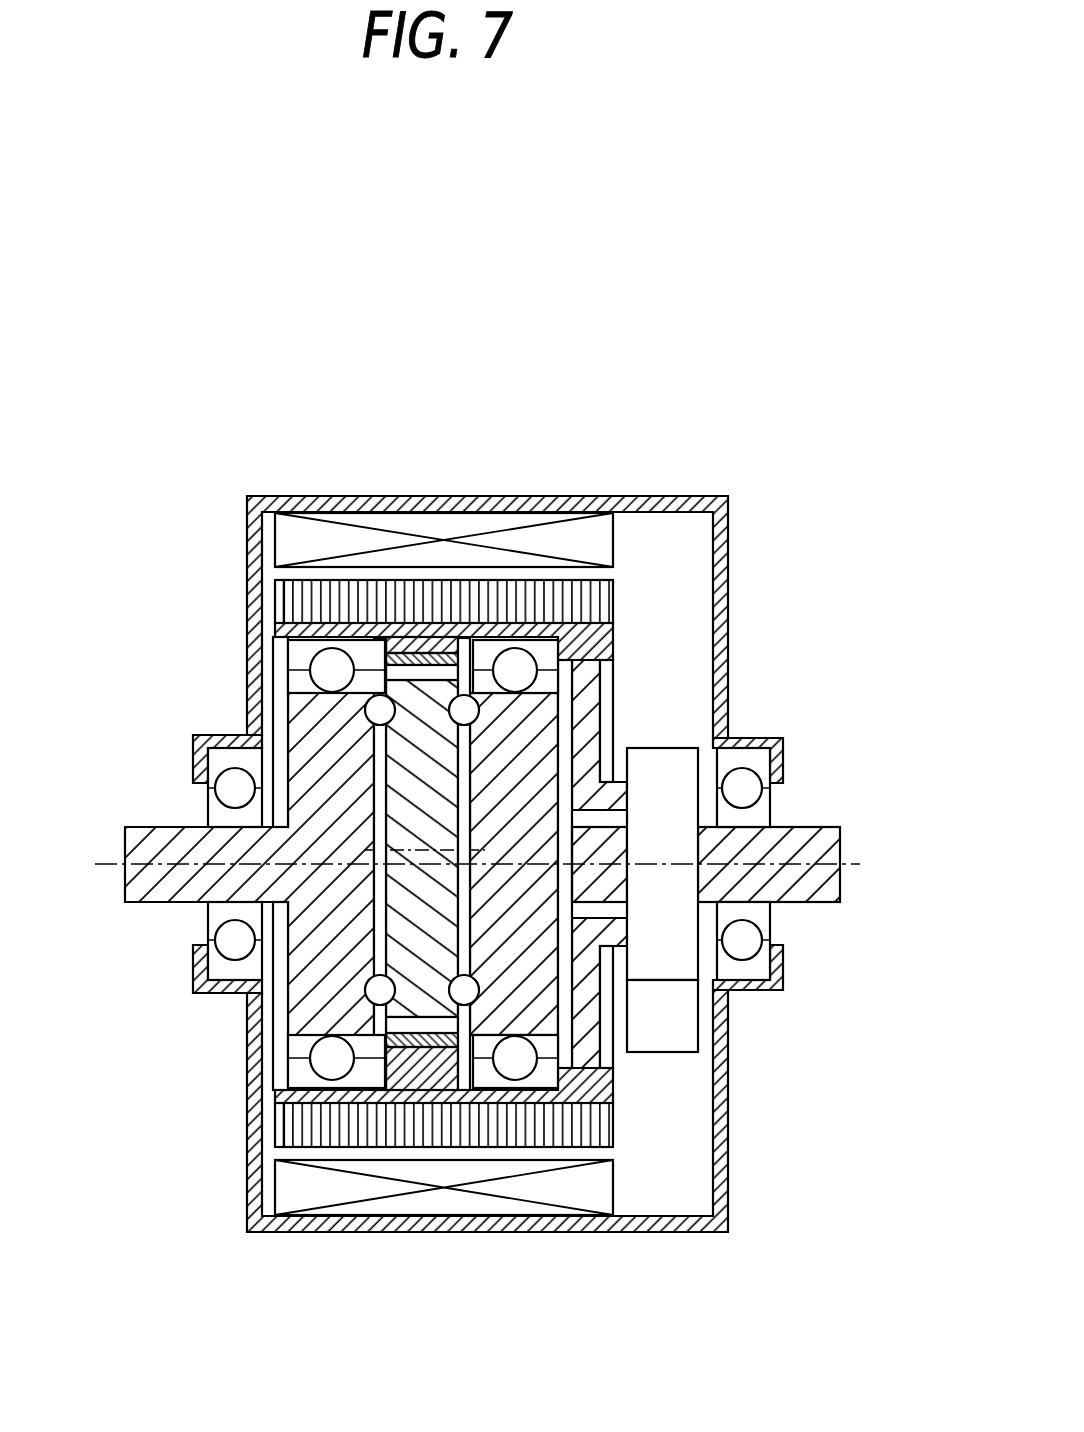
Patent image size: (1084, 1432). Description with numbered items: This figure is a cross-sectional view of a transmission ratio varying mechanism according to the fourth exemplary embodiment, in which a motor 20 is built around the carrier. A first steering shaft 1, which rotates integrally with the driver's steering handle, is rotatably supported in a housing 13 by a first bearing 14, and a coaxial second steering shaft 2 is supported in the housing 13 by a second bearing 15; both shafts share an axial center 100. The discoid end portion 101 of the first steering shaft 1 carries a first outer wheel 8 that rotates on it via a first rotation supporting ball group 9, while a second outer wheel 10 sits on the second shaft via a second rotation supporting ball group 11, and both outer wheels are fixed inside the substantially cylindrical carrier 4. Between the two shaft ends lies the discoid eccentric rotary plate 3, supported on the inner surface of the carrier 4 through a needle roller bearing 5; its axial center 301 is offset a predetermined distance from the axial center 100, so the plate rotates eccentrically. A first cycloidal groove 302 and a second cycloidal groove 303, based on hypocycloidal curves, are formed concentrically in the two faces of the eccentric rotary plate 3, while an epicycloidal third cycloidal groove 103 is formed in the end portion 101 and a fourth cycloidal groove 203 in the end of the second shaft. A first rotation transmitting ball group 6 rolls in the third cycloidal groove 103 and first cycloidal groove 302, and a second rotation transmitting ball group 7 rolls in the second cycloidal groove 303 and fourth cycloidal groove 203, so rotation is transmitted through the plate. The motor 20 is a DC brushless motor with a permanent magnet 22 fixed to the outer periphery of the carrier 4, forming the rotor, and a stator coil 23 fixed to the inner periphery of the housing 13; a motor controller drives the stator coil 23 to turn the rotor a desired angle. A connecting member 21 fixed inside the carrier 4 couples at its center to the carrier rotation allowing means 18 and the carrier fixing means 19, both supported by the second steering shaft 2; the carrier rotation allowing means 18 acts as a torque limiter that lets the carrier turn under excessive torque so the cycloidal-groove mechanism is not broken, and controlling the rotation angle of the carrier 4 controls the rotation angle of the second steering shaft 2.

The first steering shaft 1 is at (150, 880).
The second steering shaft 2 is at (835, 840).
The eccentric rotary plate 3 is at (435, 700).
The carrier 4 is at (617, 643).
The bearing 5 is at (450, 1040).
The first rotation transmitting ball group 6 is at (372, 708).
The second rotation transmitting ball group 7 is at (466, 690).
The first outer wheel 8 is at (332, 645).
The first rotation supporting ball group 9 is at (300, 672).
The second outer wheel 10 is at (537, 1082).
The second rotation supporting ball group 11 is at (512, 1065).
The housing 13 is at (683, 496).
The first bearing 14 is at (213, 968).
The second bearing 15 is at (762, 967).
The carrier rotation allowing means 18 is at (677, 760).
The carrier fixing means 19 is at (682, 1022).
The motor 20 is at (250, 578).
The connecting member 21 is at (615, 665).
The permanent magnet 22 is at (290, 603).
The stator coil 23 is at (598, 538).
The axial center 100 is at (860, 866).
The end portion 101 is at (300, 725).
The third cycloidal groove 103 is at (392, 655).
The fourth cycloidal groove 203 is at (413, 1090).
The axial center 301 is at (330, 822).
The first cycloidal groove 302 is at (410, 690).
The second cycloidal groove 303 is at (440, 1035).